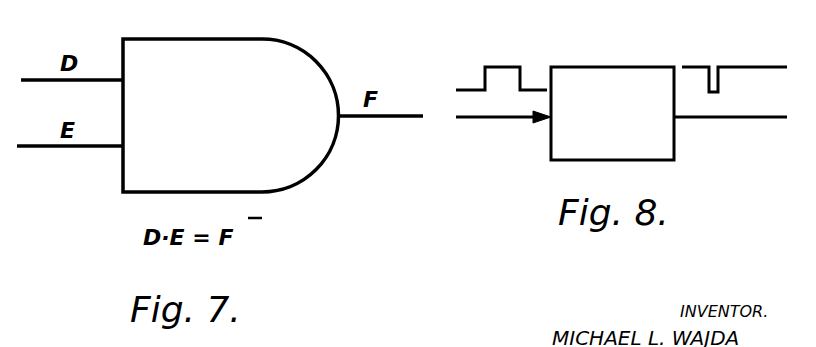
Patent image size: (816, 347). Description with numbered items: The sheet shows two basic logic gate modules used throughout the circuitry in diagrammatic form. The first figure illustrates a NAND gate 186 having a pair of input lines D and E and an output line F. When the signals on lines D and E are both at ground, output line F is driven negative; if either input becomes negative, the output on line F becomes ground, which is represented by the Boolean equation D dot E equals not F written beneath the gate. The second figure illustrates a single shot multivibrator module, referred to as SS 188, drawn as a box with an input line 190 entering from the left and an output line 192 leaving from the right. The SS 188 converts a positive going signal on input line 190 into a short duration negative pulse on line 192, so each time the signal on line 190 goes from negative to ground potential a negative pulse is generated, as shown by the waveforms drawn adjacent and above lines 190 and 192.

In FIG. 7, the NAND gate 186 is at (305, 80).
In FIG. 8, the single shot multivibrator module 188 is at (647, 77).
In FIG. 8, the input line 190 is at (493, 118).
In FIG. 8, the output line 192 is at (717, 118).